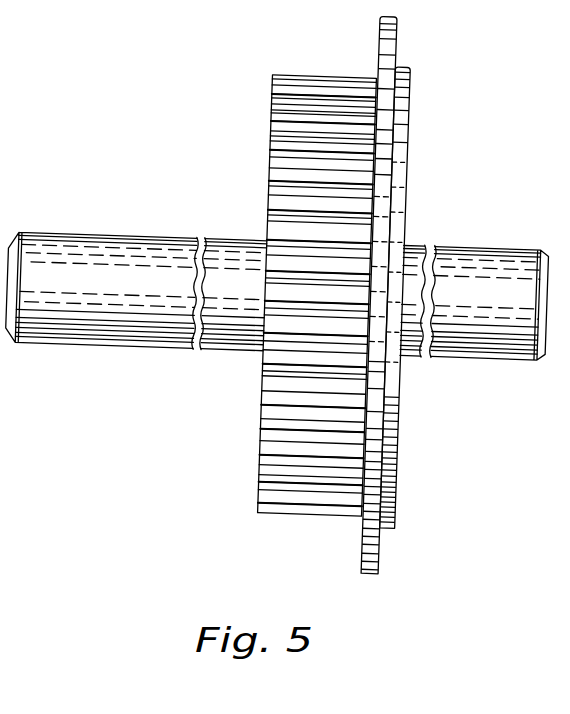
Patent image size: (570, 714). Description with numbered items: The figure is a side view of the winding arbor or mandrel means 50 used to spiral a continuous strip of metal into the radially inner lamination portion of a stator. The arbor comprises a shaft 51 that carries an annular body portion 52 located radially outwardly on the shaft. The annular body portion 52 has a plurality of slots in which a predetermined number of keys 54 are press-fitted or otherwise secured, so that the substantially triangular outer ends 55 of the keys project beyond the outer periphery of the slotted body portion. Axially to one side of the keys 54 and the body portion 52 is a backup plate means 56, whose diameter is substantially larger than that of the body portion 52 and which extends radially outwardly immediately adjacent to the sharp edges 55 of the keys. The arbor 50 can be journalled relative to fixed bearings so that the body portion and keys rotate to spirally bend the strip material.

The winding arbor or mandrel means 50 is at (265, 104).
The shaft 51 is at (127, 350).
The annular body portion 52 is at (276, 385).
The keys 54 is at (269, 192).
The triangular outer ends 55 is at (273, 457).
The backup plate means 56 is at (376, 46).